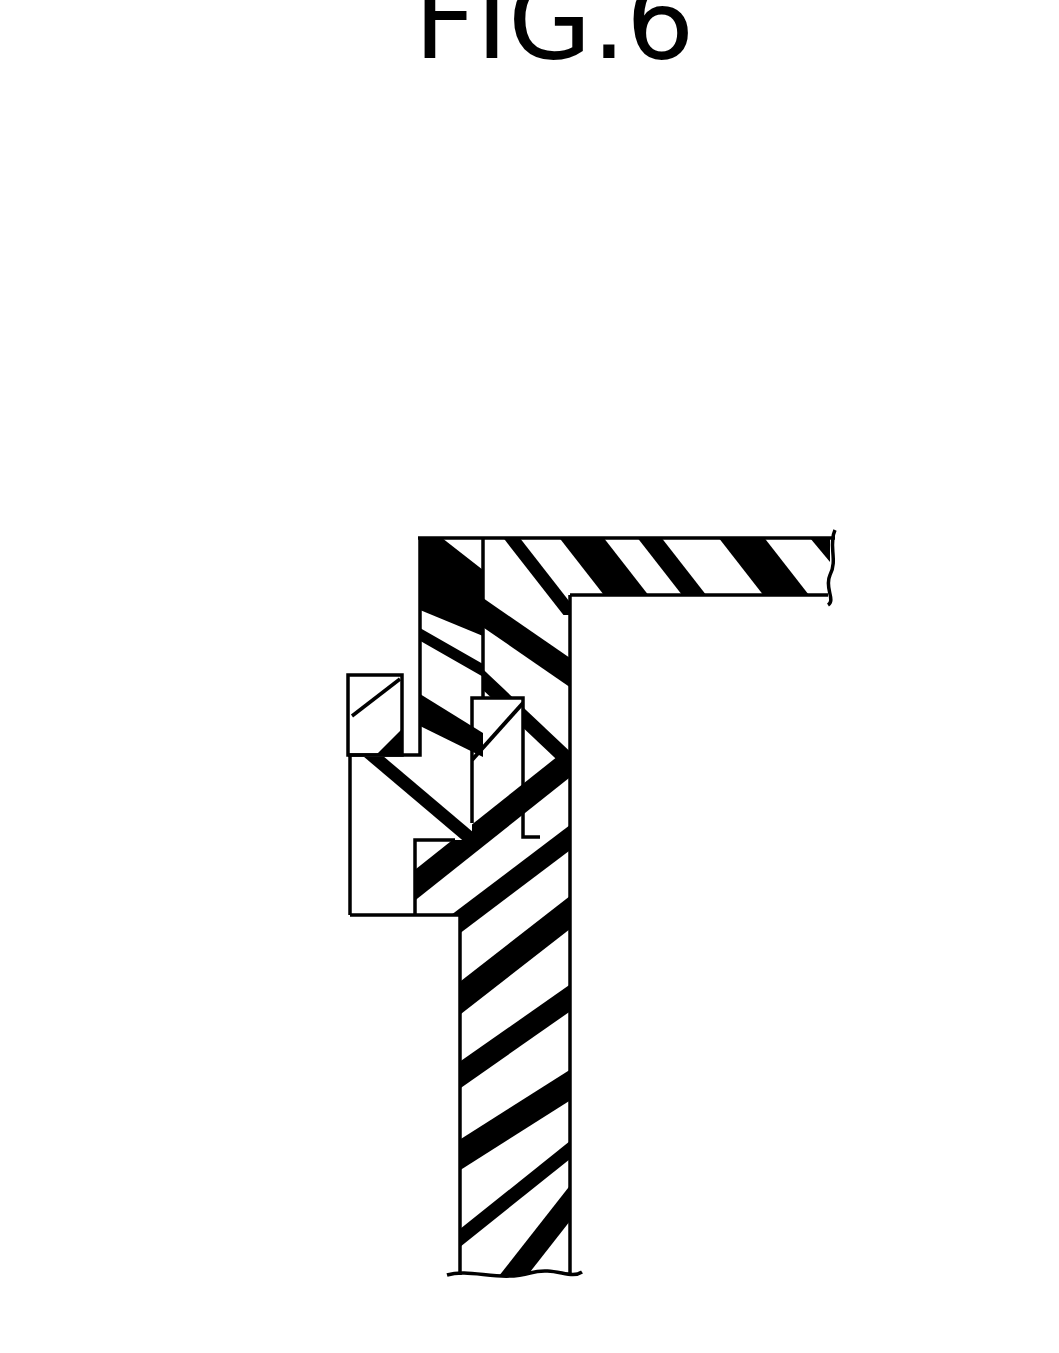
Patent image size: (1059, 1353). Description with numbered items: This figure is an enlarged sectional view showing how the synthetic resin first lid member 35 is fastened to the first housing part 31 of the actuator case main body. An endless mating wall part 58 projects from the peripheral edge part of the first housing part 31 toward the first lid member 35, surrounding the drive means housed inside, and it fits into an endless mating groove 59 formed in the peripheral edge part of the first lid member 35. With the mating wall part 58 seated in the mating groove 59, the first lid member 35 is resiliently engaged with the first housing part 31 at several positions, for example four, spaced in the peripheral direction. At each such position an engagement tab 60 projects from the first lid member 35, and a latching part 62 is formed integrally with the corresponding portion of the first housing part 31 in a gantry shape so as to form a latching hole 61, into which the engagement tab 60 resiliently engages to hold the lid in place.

The first housing part 31 is at (470, 1045).
The first lid member 35 is at (643, 553).
The mating wall part 58 is at (472, 573).
The mating groove 59 is at (515, 772).
The engagement tab 60 is at (400, 822).
The latching hole 61 is at (377, 767).
The latching part 62 is at (370, 714).